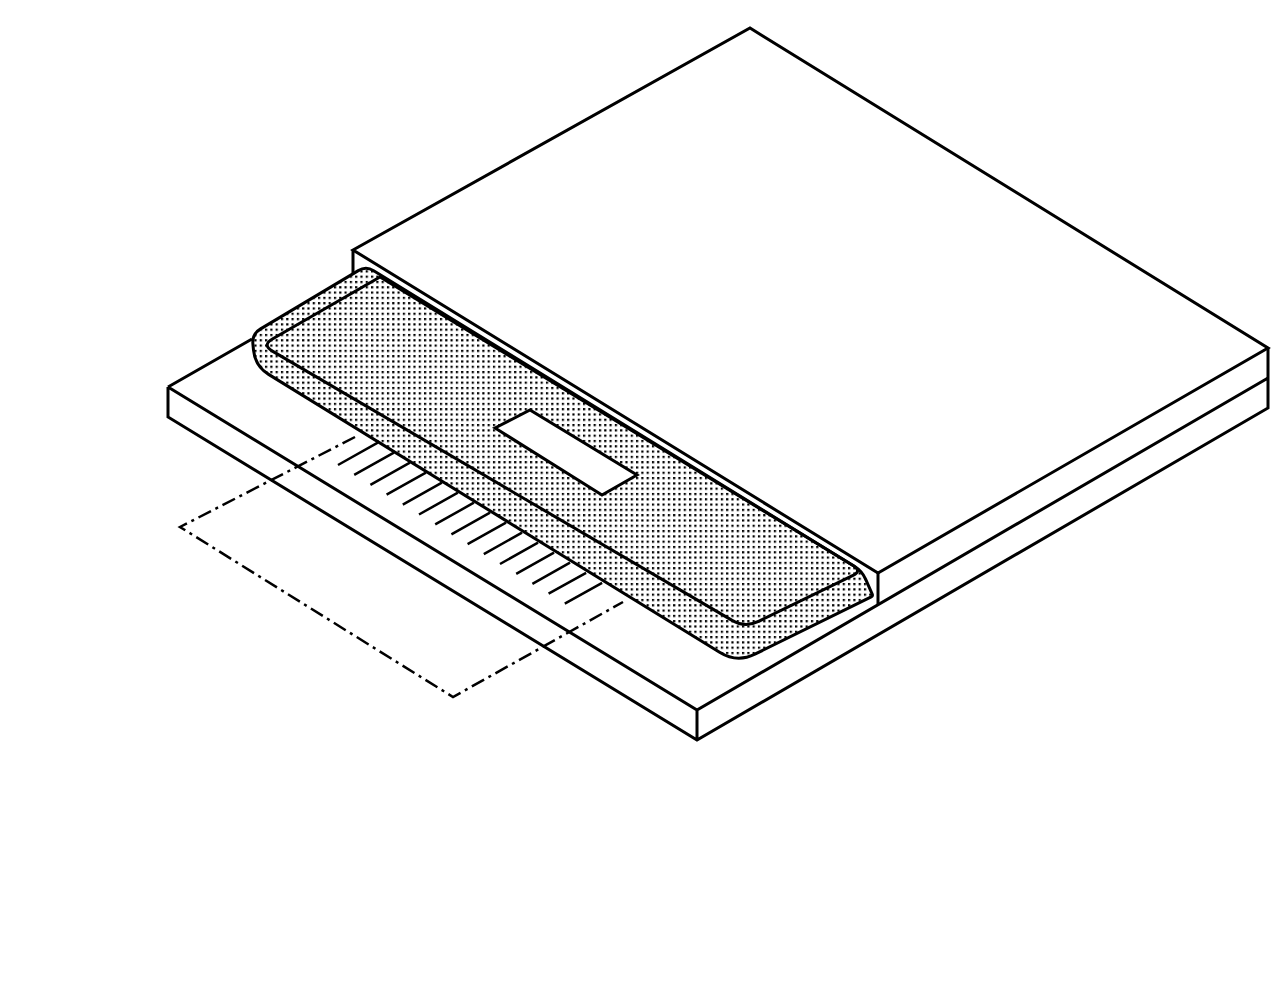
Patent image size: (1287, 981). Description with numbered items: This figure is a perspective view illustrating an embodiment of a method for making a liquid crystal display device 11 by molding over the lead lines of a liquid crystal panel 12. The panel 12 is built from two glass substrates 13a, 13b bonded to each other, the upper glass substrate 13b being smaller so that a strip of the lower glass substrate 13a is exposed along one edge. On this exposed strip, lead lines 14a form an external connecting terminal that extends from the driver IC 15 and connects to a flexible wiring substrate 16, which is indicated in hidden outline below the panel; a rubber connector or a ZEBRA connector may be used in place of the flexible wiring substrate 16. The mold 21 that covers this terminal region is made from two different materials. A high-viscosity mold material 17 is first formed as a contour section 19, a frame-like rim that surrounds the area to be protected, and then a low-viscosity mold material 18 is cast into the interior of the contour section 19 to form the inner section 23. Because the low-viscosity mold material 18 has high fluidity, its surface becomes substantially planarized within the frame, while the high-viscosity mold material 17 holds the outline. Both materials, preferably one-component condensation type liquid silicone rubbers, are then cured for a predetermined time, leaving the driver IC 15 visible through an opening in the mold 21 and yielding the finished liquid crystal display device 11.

The liquid crystal display device 11 is at (556, 120).
The liquid crystal panel 12 is at (1095, 240).
The glass substrate 13a is at (1150, 463).
The glass substrate 13b is at (917, 148).
The lead lines 14a is at (588, 592).
The driver IC 15 is at (582, 460).
The flexible wiring substrate 16 is at (370, 646).
The high-viscosity mold material 17 is at (498, 463).
The low-viscosity mold material 18 is at (549, 435).
The contour section 19 is at (270, 323).
The mold 21 is at (292, 186).
The inner section 23 is at (347, 320).